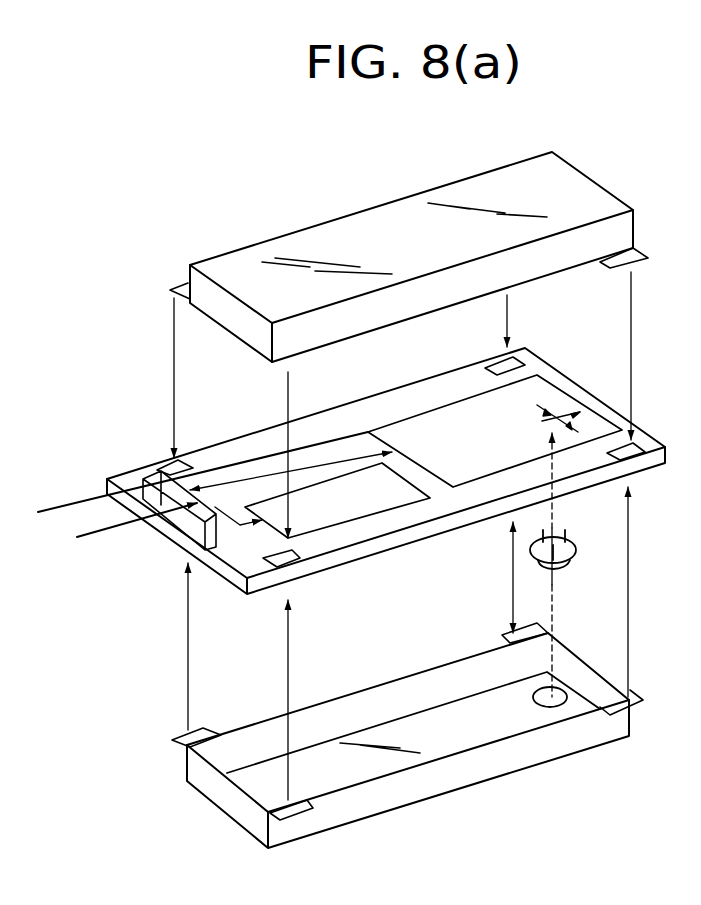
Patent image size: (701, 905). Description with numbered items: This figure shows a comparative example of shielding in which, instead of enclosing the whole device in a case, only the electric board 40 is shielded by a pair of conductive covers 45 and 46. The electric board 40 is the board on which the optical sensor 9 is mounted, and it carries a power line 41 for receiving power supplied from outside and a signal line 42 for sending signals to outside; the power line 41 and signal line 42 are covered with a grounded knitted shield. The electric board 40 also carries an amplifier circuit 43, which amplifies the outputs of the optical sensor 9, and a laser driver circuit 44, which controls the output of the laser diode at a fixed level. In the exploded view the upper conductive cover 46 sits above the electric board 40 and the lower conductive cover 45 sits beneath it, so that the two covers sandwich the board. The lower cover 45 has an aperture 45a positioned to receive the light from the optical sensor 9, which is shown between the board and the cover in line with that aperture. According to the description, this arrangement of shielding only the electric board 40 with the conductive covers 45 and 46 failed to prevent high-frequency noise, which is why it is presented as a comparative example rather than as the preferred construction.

The optical sensor 9 is at (577, 548).
The electric board 40 is at (163, 458).
The power line 41 is at (120, 531).
The signal line 42 is at (73, 498).
The amplifier circuit 43 is at (427, 415).
The laser driver circuit 44 is at (273, 507).
The conductive cover 45 is at (462, 780).
The aperture 45a is at (553, 707).
The conductive cover 46 is at (322, 228).